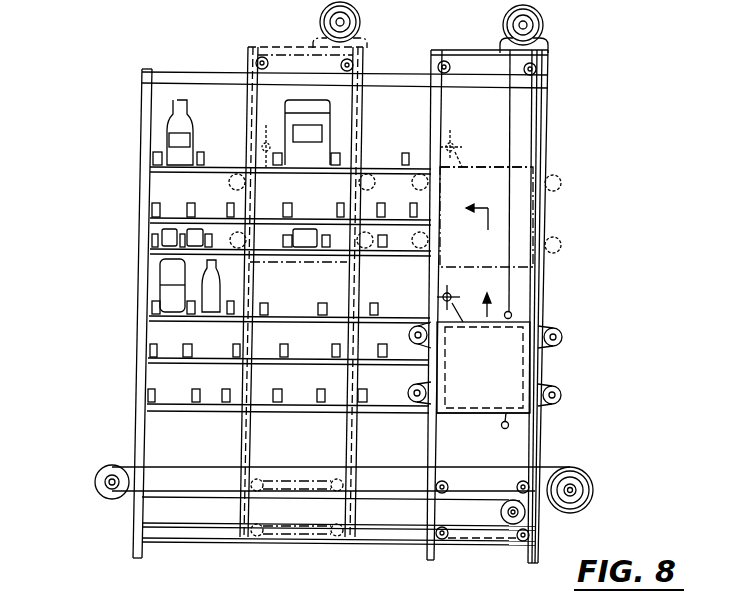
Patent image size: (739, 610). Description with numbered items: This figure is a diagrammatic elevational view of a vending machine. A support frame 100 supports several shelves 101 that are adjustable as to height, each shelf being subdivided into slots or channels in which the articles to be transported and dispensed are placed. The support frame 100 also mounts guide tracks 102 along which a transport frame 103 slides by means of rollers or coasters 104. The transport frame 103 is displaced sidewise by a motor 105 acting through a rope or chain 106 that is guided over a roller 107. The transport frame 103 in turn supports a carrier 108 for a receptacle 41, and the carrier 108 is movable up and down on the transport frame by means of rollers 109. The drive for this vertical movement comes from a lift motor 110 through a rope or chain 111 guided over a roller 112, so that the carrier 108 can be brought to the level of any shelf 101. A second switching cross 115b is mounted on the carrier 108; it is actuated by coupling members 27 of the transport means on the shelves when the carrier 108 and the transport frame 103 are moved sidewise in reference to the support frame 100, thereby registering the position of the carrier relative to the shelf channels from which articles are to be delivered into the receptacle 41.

The coupling member 27 is at (150, 313).
The receptacle 41 is at (472, 415).
The support frame 100 is at (138, 414).
The shelf 101 is at (148, 357).
The guide track 102 is at (143, 77).
The transport frame 103 is at (481, 55).
The roller 104 is at (457, 60).
The motor 105 is at (565, 476).
The rope or chain 106 is at (133, 466).
The roller 107 is at (95, 484).
The carrier 108 is at (500, 368).
The roller 109 is at (555, 330).
The lift motor 110 is at (541, 20).
The rope or chain 111 is at (512, 145).
The roller 112 is at (518, 512).
The second switching cross 115b is at (452, 296).